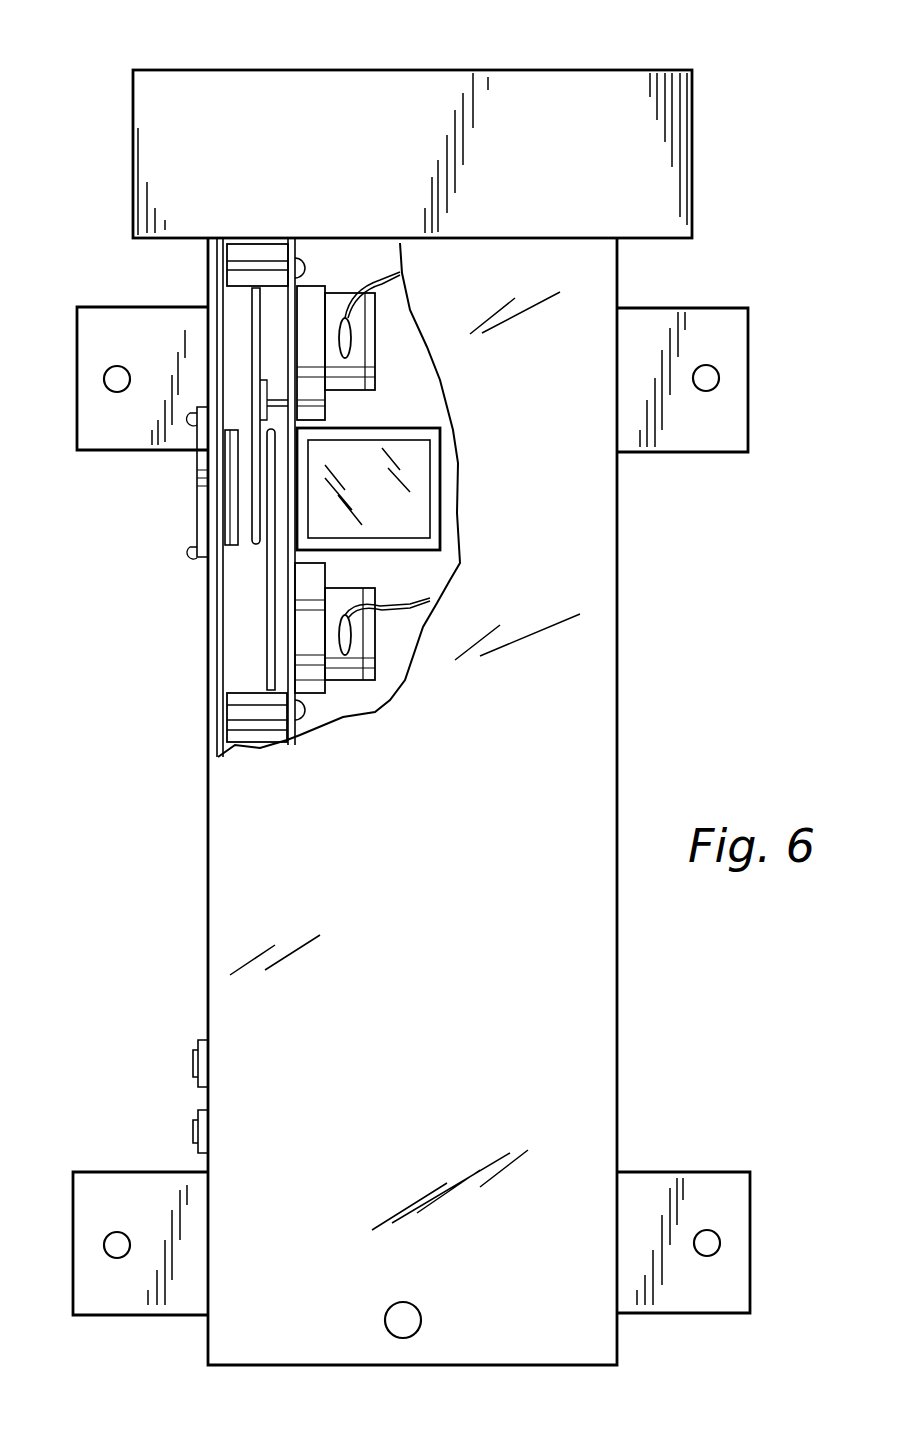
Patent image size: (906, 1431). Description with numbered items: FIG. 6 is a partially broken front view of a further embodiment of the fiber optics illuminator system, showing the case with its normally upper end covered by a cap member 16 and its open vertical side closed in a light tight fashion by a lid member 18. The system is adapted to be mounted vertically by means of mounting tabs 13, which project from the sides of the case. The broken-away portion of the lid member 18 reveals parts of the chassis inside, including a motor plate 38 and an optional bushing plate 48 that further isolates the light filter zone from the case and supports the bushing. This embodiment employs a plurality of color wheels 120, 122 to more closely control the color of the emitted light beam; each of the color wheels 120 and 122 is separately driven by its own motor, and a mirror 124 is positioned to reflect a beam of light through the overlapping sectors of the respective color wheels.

The mounting tabs 13 is at (745, 330).
The cap member 16 is at (545, 100).
The lid member 18 is at (424, 895).
The motor plate 38 is at (293, 300).
The bushing plate 48 is at (223, 295).
The color wheel 120 is at (258, 340).
The color wheel 122 is at (265, 632).
The mirror 124 is at (410, 467).